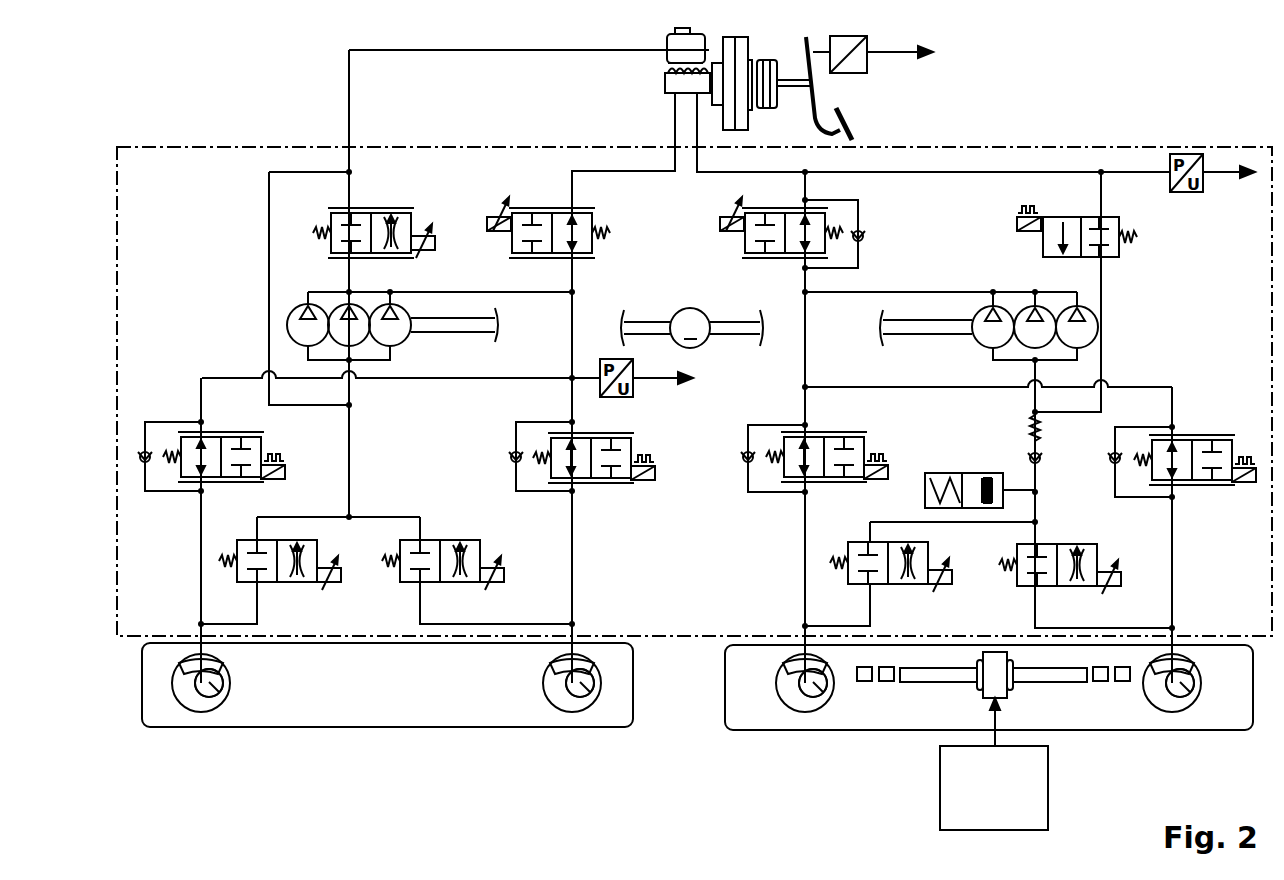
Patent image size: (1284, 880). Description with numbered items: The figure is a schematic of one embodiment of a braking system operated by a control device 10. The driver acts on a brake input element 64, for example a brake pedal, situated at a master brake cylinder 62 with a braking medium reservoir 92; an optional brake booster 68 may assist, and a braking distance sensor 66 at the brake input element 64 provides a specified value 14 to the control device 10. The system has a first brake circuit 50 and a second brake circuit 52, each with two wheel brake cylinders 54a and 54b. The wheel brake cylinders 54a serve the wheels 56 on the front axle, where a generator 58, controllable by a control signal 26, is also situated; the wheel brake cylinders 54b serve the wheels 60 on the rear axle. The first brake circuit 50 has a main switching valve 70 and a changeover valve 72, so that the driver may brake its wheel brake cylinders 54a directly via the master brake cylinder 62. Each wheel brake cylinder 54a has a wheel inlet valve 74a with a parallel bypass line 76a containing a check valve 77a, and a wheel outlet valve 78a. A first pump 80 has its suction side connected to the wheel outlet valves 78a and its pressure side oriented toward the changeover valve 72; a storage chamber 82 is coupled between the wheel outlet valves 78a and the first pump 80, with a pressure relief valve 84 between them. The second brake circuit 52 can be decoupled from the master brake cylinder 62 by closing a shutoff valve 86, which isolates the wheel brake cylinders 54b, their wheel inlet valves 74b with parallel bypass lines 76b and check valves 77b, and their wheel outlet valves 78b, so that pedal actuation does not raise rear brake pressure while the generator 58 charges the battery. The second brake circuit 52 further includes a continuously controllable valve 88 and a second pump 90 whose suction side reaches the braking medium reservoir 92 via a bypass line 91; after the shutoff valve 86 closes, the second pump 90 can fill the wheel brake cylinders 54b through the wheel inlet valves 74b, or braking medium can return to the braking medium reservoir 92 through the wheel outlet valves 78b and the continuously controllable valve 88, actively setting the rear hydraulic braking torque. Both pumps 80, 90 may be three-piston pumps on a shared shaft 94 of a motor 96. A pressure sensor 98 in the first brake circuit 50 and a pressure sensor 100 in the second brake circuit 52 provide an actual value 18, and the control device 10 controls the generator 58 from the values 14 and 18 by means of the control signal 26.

The control device 10 is at (1048, 797).
The specified value 14 is at (908, 54).
The actual value 18 is at (1232, 176).
The control signal 26 is at (998, 724).
The first brake circuit 50 is at (876, 751).
The second brake circuit 52 is at (476, 745).
The wheel brake cylinder 54a is at (796, 728).
The wheel brake cylinder 54b is at (192, 728).
The wheel 56 is at (816, 728).
The generator 58 is at (995, 668).
The wheel 60 is at (212, 728).
The master brake cylinder 62 is at (666, 86).
The brake input element 64 is at (832, 80).
The braking distance sensor 66 is at (867, 38).
The brake booster 68 is at (747, 114).
The main switching valve 70 is at (1043, 246).
The changeover valve 72 is at (745, 245).
The wheel inlet valve 74a is at (866, 441).
The wheel inlet valve 74b is at (262, 441).
The bypass line 76a is at (767, 495).
The bypass line 76b is at (163, 494).
The check valve 77a is at (744, 455).
The check valve 77b is at (138, 455).
The wheel outlet valve 78a is at (894, 586).
The wheel outlet valve 78b is at (281, 584).
The first pump 80 is at (974, 348).
The storage chamber 82 is at (960, 472).
The pressure relief valve 84 is at (1028, 453).
The shutoff valve 86 is at (596, 220).
The continuously controllable valve 88 is at (330, 228).
The second pump 90 is at (295, 306).
The bypass line 91 is at (268, 292).
The braking medium reservoir 92 is at (668, 42).
The shared shaft 94 is at (745, 338).
The motor 96 is at (685, 308).
The pressure sensor 98 is at (1188, 195).
The pressure sensor 100 is at (612, 358).